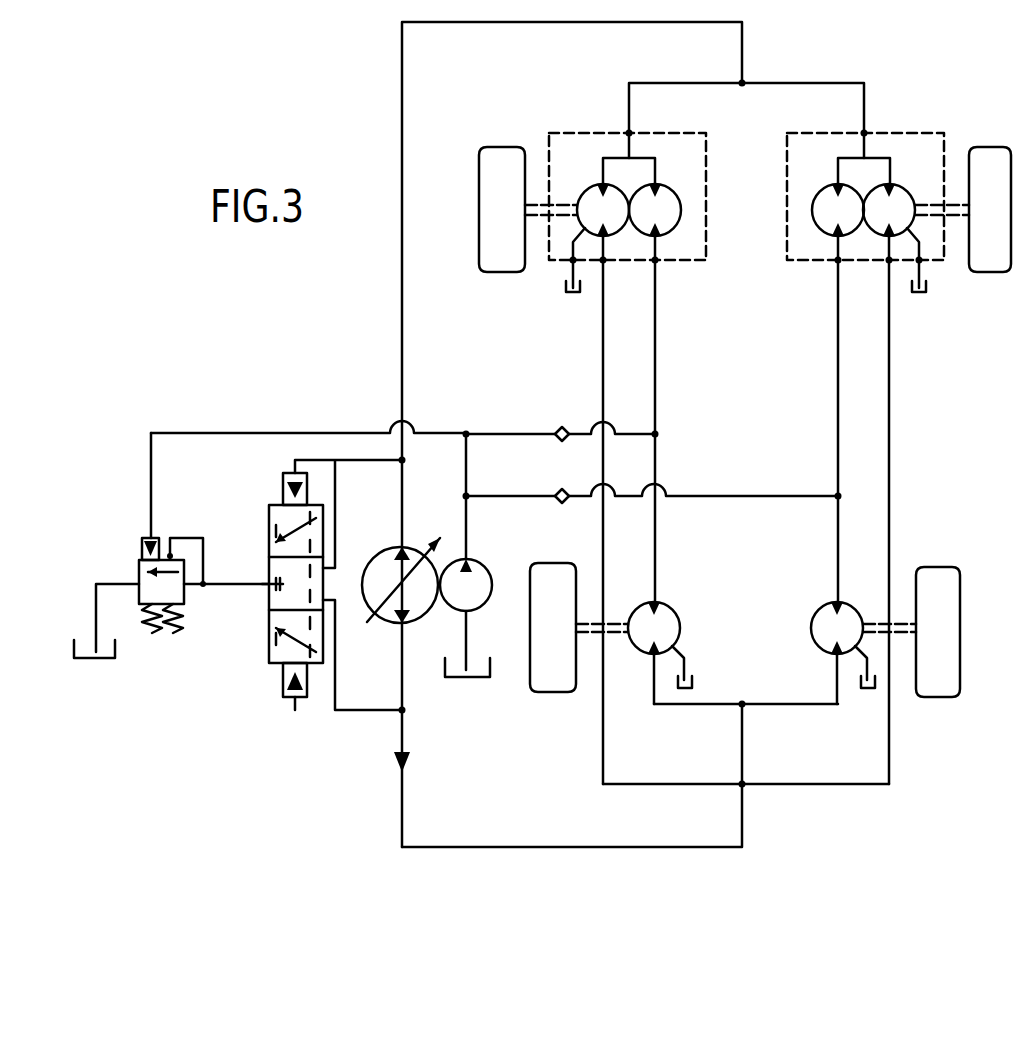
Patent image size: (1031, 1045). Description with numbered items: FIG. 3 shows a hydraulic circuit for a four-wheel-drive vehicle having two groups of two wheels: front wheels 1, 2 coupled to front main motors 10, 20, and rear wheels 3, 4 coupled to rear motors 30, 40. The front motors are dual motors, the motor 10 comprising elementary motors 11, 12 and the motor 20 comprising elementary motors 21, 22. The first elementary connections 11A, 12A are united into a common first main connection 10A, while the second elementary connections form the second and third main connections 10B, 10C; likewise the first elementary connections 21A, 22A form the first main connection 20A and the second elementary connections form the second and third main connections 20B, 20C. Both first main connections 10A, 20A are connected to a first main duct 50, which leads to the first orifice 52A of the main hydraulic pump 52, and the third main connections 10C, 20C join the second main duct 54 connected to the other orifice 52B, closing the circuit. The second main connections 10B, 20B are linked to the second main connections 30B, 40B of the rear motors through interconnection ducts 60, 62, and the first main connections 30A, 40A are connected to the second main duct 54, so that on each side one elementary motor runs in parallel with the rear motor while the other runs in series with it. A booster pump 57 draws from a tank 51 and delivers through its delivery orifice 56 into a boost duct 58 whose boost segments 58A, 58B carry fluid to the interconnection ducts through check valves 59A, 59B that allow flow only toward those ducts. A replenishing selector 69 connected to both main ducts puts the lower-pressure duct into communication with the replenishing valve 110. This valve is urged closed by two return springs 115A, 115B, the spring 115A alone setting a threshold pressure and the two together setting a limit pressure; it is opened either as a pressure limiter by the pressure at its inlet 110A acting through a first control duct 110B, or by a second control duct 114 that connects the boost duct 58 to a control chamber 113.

The front wheel 1 is at (492, 152).
The front wheel 2 is at (985, 160).
The rear wheel 3 is at (557, 672).
The rear wheel 4 is at (935, 575).
The front main motor 10 is at (556, 132).
The first main connection 10A is at (633, 146).
The second main connection 10B is at (662, 240).
The third main connection 10C is at (612, 240).
The first elementary motor 11 is at (672, 200).
The first elementary connection 11A is at (660, 180).
The second elementary motor 12 is at (596, 200).
The first elementary connection 12A is at (600, 178).
The front main motor 20 is at (890, 133).
The first main connection 20A is at (862, 148).
The second main connection 20B is at (832, 240).
The third main connection 20C is at (883, 240).
The first elementary motor 21 is at (822, 213).
The first elementary connection 21A is at (834, 181).
The second elementary motor 22 is at (900, 225).
The first elementary connection 22A is at (892, 182).
The rear motor 30 is at (668, 622).
The first main connection 30A is at (648, 655).
The second main connection 30B is at (660, 603).
The rear motor 40 is at (822, 622).
The first main connection 40A is at (832, 655).
The second main connection 40B is at (832, 603).
The first main duct 50 is at (402, 93).
The tank 51 is at (96, 658).
The main hydraulic pump 52 is at (400, 550).
The first orifice 52A is at (400, 545).
The second orifice 52B is at (400, 625).
The second main duct 54 is at (555, 847).
The booster pump 56 is at (482, 595).
The delivery orifice 57 is at (470, 560).
The boost duct 58 is at (466, 496).
The boost segment 58A is at (493, 434).
The boost segment 58B is at (515, 496).
The check valve 59A is at (562, 426).
The check valve 59B is at (566, 504).
The interconnection duct 60 is at (656, 358).
The interconnection duct 62 is at (838, 358).
The replenishing selector 69 is at (266, 530).
The replenishing valve 110 is at (138, 538).
The inlet 110A is at (224, 584).
The first control duct 110B is at (180, 545).
The control chamber 113 is at (142, 550).
The second control duct 114 is at (258, 433).
The return spring 115A is at (180, 618).
The return spring 115B is at (152, 632).